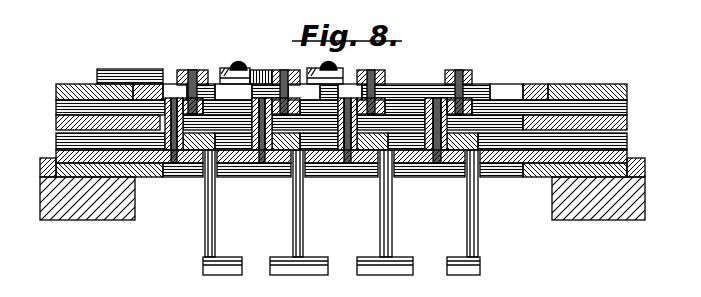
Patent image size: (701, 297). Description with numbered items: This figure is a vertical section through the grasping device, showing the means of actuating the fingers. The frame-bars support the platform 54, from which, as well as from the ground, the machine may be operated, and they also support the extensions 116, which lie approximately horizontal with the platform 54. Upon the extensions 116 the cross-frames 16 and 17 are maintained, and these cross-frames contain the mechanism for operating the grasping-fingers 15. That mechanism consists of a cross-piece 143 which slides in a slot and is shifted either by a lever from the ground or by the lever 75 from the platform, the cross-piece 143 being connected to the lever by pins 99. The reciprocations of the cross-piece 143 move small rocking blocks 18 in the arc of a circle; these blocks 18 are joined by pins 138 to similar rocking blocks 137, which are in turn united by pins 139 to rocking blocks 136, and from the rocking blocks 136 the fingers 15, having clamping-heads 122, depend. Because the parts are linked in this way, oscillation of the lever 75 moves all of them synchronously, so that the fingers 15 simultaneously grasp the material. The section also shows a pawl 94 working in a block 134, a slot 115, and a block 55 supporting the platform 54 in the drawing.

The grasping-fingers 15 is at (292, 228).
The cross-frame 16 is at (56, 141).
The cross-frame 17 is at (56, 93).
The rocking blocks 18 is at (481, 68).
The platform 54 is at (342, 198).
The spacer blocks 55 is at (40, 166).
The lever 75 is at (259, 69).
The pawl 94 is at (240, 59).
The pins 99 is at (329, 59).
The slot 115 is at (281, 76).
The extensions 116 is at (143, 178).
The clamping-heads 122 is at (341, 266).
The block 134 is at (203, 104).
The rocking blocks 136 is at (250, 152).
The rocking blocks 137 is at (430, 100).
The pins 138 is at (492, 92).
The pins 139 is at (177, 162).
The cross-piece 143 is at (130, 70).